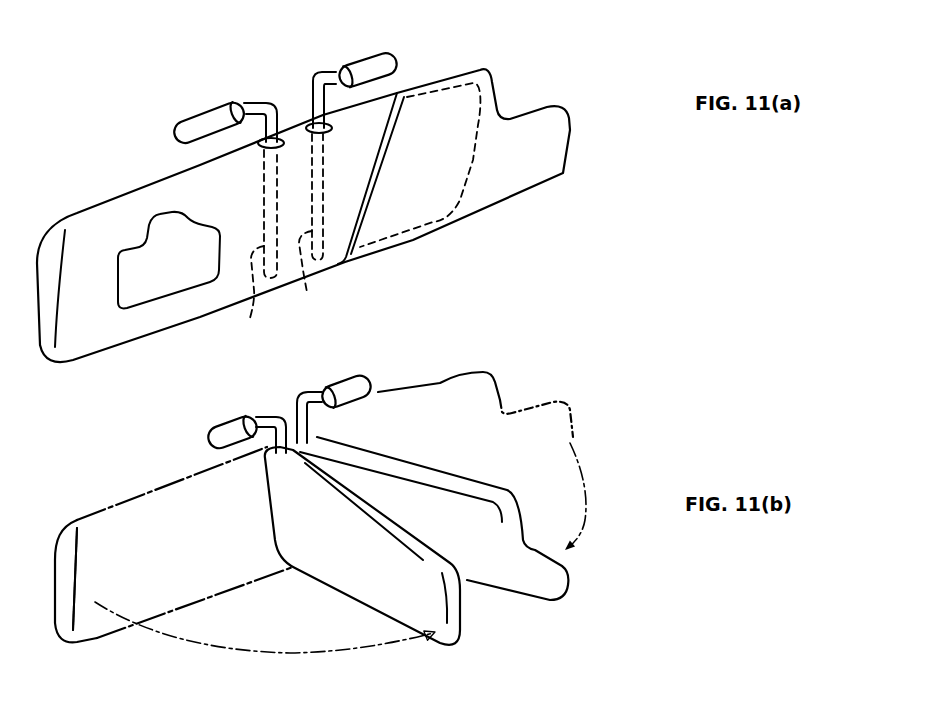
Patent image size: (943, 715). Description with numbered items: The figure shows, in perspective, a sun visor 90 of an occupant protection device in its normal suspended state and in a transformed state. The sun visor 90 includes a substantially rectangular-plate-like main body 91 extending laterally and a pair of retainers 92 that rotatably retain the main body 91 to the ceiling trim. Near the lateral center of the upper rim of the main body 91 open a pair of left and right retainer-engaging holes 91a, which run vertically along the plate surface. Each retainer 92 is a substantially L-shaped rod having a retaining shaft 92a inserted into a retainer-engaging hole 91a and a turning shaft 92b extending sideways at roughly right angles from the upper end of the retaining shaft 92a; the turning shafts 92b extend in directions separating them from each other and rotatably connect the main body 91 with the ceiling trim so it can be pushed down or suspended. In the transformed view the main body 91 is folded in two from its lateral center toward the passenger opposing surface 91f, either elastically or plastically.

In FIG. 11A, the sun visor 90 is at (500, 71).
In FIG. 11B, the sun visor 90 is at (567, 605).
In FIG. 11A, the main body 91 is at (515, 178).
In FIG. 11B, the main body 91 is at (487, 390).
In FIG. 11A, the retainer-engaging hole 91a is at (258, 147).
In FIG. 11A, the passenger opposing surface 91f is at (84, 312).
In FIG. 11B, the passenger opposing surface 91f is at (207, 577).
In FIG. 11A, the retainer 92 is at (407, 22).
In FIG. 11B, the retainer 92 is at (308, 397).
In FIG. 11A, the retaining shaft 92a is at (279, 238).
In FIG. 11A, the turning shaft 92b is at (235, 110).
In FIG. 11B, the turning shaft 92b is at (205, 440).